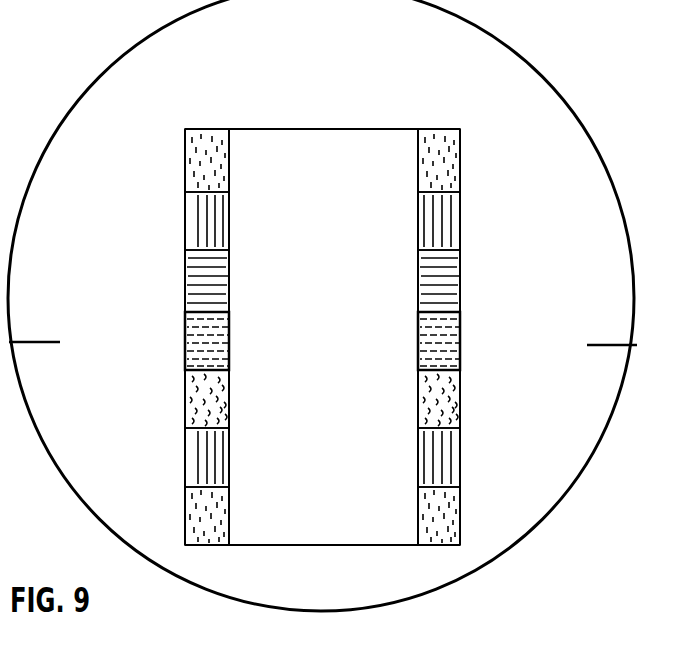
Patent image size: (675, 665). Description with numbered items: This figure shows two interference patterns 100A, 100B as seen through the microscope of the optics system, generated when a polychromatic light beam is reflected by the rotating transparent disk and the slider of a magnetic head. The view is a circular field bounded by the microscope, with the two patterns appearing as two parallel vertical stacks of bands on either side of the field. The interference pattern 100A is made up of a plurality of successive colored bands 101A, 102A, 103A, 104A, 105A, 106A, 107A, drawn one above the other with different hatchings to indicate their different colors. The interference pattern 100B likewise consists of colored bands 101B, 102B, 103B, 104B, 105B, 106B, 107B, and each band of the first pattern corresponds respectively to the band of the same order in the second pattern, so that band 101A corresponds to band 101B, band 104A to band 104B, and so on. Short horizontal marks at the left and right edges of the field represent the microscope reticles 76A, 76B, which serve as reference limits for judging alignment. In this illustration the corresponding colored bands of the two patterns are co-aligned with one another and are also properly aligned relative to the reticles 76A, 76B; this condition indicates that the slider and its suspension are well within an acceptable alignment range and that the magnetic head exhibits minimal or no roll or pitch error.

The microscope reticle 76A is at (42, 342).
The microscope reticle 76B is at (596, 345).
The interference pattern 100A is at (142, 271).
The interference pattern 100B is at (498, 275).
The colored band 101A is at (192, 165).
The colored band 101B is at (450, 170).
The colored band 102A is at (196, 222).
The colored band 102B is at (450, 225).
The colored band 103A is at (194, 297).
The colored band 103B is at (450, 300).
The colored band 104A is at (196, 347).
The colored band 104B is at (452, 348).
The colored band 105A is at (196, 402).
The colored band 105B is at (450, 405).
The colored band 106A is at (196, 460).
The colored band 106B is at (450, 463).
The colored band 107A is at (200, 511).
The colored band 107B is at (450, 512).